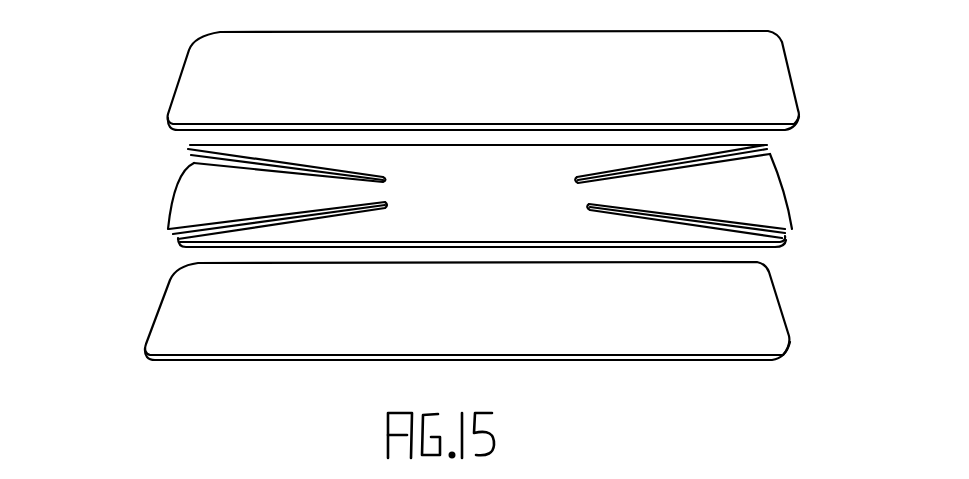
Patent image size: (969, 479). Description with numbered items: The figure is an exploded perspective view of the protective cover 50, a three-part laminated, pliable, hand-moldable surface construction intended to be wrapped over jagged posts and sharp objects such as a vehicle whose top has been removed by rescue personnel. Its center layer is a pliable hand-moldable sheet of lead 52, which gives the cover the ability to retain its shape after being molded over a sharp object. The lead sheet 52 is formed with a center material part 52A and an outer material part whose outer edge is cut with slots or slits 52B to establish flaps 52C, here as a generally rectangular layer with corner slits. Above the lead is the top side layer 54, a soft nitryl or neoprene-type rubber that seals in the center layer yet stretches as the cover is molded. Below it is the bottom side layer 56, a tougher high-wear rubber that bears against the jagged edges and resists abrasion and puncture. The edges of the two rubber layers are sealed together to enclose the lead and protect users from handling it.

The protective cover 50 is at (485, 216).
The sheet of lead 52 is at (500, 220).
The center material part 52A is at (480, 191).
The slots or slits 52B is at (782, 238).
The flaps 52C is at (764, 180).
The top side layer 54 is at (788, 58).
The bottom side layer 56 is at (793, 347).